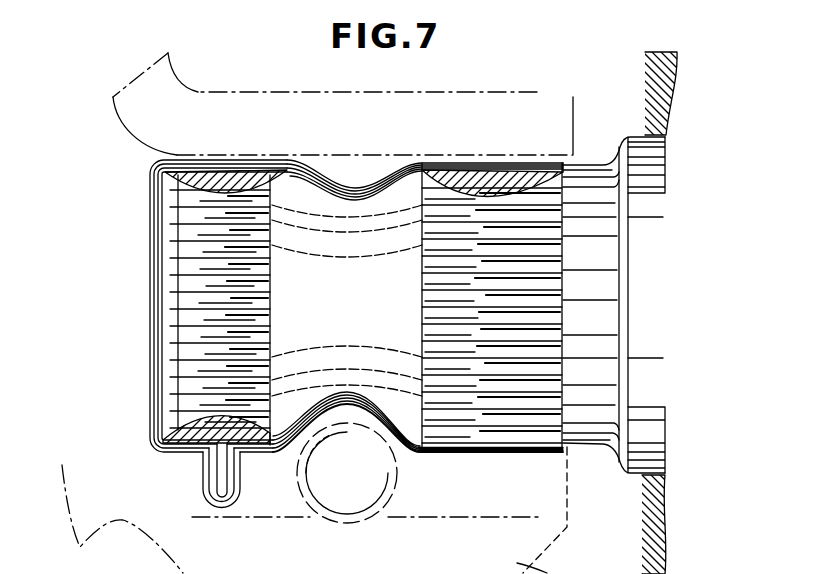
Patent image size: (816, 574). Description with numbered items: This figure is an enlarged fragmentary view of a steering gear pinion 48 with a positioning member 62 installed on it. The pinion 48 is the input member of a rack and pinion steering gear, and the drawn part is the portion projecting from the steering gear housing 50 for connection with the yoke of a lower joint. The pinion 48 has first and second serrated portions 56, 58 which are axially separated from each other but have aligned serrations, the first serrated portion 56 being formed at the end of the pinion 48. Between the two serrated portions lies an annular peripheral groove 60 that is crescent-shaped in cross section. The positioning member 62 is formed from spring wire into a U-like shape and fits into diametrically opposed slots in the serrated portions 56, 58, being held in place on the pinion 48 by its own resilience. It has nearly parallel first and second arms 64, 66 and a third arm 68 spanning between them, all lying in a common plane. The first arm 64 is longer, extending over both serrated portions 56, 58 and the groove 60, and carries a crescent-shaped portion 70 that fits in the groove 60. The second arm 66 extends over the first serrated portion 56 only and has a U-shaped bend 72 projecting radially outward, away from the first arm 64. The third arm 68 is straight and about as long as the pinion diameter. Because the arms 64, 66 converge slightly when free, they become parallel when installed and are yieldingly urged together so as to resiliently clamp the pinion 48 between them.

The pinion 48 is at (592, 163).
The steering gear housing 50 is at (655, 87).
The first serrated portion 56 is at (260, 368).
The second serrated portion 58 is at (493, 432).
The annular peripheral groove 60 is at (340, 427).
The positioning member 62 is at (146, 251).
The first arm 64 is at (228, 170).
The second arm 66 is at (253, 450).
The third arm 68 is at (153, 337).
The crescent-shaped portion 70 is at (348, 182).
The U-shaped bend 72 is at (222, 503).